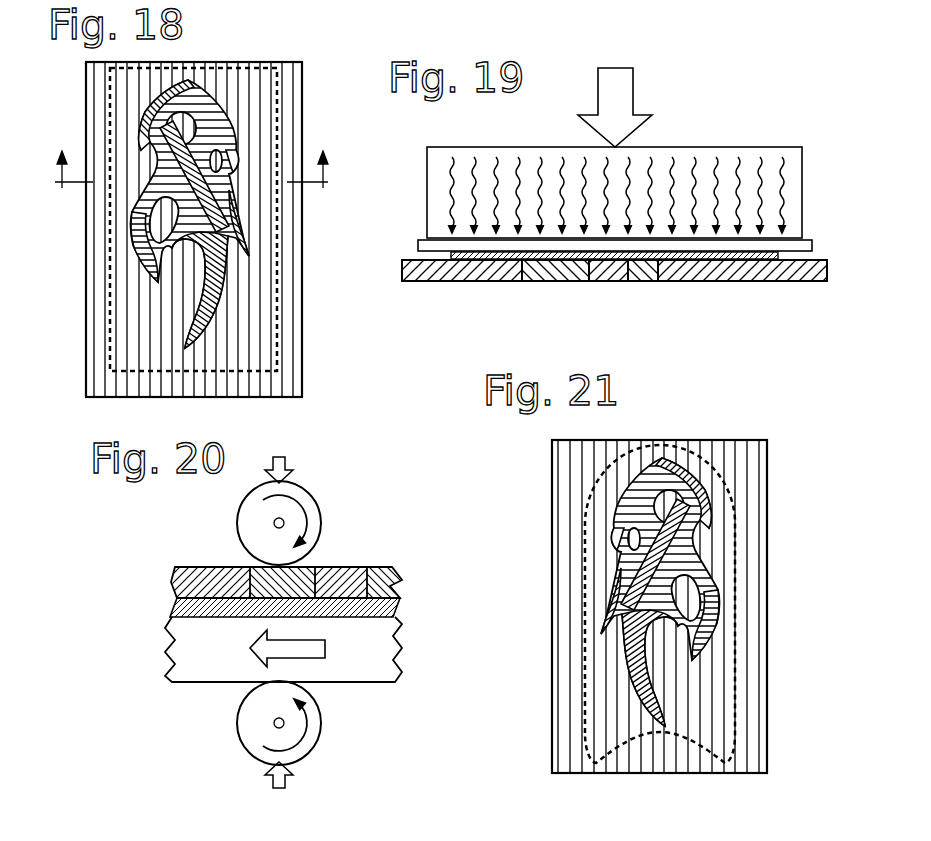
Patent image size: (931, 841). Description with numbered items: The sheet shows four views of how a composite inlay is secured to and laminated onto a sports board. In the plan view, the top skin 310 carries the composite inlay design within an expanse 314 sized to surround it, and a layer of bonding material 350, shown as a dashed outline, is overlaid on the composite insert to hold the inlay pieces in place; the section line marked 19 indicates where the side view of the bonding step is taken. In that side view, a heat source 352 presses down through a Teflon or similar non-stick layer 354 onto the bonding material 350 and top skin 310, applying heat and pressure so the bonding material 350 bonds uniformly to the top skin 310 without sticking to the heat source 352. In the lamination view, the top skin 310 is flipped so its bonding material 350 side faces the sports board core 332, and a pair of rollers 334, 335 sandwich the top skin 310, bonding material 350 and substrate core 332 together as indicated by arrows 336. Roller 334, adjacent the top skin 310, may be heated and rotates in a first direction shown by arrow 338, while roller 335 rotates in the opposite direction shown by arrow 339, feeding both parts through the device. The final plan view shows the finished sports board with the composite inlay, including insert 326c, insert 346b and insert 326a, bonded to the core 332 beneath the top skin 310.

In FIG. 18, the section line 19- 19 is at (193, 157).
In FIG. 18, the top skin 310 is at (232, 62).
In FIG. 20, the top skin 310 is at (174, 575).
In FIG. 21, the top skin 310 is at (553, 497).
In FIG. 21, the expanse 314 is at (708, 440).
In FIG. 21, the insert 326a is at (707, 577).
In FIG. 21, the insert 326c is at (635, 522).
In FIG. 20, the sports board core 332 is at (357, 682).
In FIG. 21, the sports board core 332 is at (733, 497).
In FIG. 20, the roller 334 is at (238, 524).
In FIG. 20, the roller 335 is at (238, 724).
In FIG. 20, the arrows 336 is at (290, 464).
In FIG. 20, the arrow 338 is at (305, 521).
In FIG. 20, the arrow 339 is at (303, 737).
In FIG. 21, the insert 346b is at (637, 638).
In FIG. 18, the bonding material 350 is at (110, 327).
In FIG. 19, the bonding material 350 is at (451, 256).
In FIG. 20, the bonding material 350 is at (174, 604).
In FIG. 19, the heat source 352 is at (735, 147).
In FIG. 19, the non-stick layer 354 is at (813, 245).